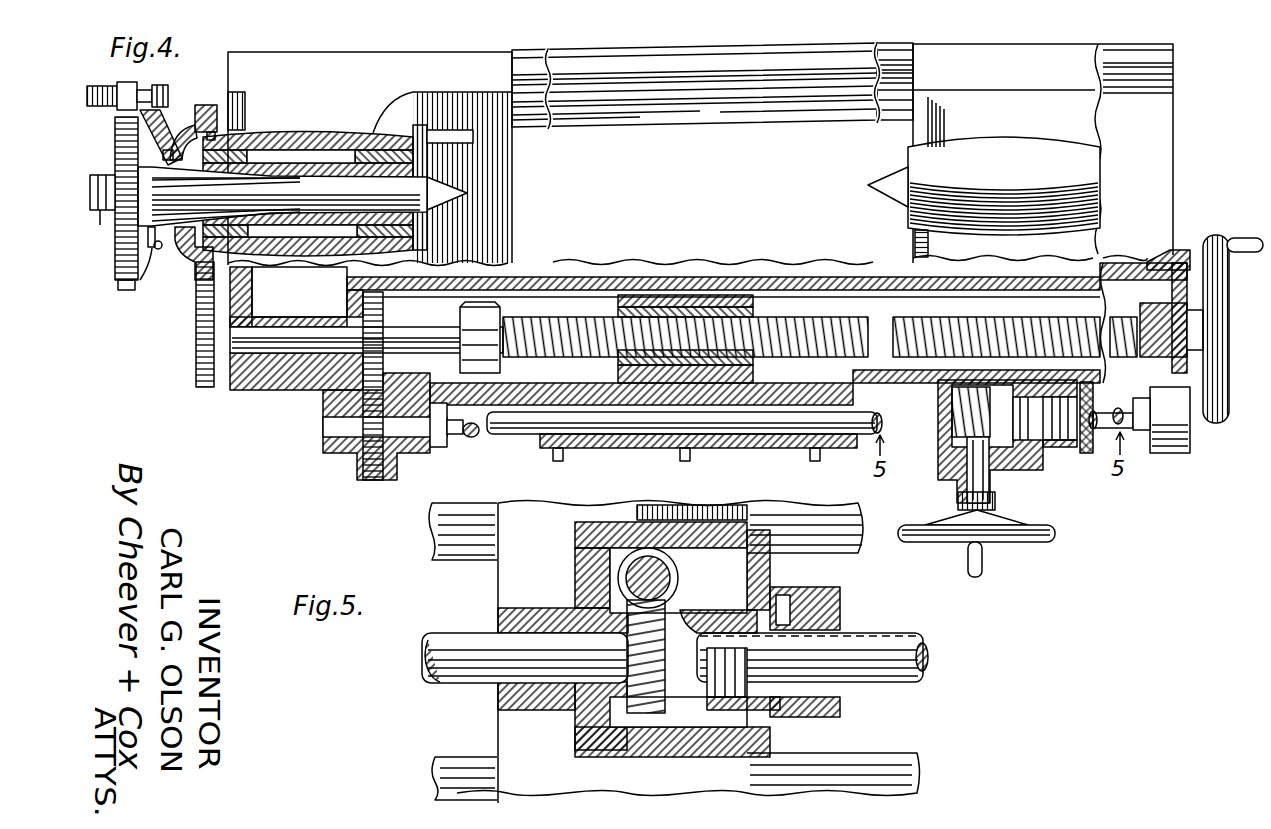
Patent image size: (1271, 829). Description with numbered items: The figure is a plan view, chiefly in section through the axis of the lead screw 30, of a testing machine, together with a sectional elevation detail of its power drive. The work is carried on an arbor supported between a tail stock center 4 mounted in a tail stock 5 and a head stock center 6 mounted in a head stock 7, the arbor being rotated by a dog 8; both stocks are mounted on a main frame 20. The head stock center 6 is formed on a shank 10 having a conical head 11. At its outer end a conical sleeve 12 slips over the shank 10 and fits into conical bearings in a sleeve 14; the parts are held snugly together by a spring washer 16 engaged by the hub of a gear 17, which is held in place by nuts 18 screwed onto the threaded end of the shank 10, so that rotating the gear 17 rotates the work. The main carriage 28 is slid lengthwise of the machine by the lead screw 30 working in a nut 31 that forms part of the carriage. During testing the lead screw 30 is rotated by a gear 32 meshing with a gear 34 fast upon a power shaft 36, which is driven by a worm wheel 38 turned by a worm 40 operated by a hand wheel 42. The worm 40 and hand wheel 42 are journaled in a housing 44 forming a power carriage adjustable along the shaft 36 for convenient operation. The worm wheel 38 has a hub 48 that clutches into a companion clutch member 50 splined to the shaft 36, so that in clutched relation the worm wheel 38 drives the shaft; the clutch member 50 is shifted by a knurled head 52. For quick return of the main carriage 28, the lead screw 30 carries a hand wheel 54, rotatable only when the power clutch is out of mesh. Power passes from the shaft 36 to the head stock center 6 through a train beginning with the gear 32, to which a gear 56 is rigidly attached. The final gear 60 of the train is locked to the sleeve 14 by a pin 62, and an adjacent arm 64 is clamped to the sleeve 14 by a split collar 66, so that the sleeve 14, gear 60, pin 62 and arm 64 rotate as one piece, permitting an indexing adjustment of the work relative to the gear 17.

In FIG. 4, the tail stock center 4 is at (890, 185).
In FIG. 4, the tail stock 5 is at (1018, 147).
In FIG. 4, the head stock center 6 is at (457, 203).
In FIG. 4, the head stock 7 is at (330, 130).
In FIG. 4, the dog 8 is at (455, 135).
In FIG. 4, the shank 10 is at (318, 190).
In FIG. 4, the conical head 11 is at (400, 183).
In FIG. 4, the conical sleeve 12 is at (188, 265).
In FIG. 4, the sleeve 14 is at (282, 152).
In FIG. 4, the spring washer 16 is at (140, 280).
In FIG. 4, the gear 17 is at (140, 272).
In FIG. 4, the nuts 18 is at (120, 228).
In FIG. 4, the main frame 20 is at (765, 116).
In FIG. 5, the main frame 20 is at (430, 540).
In FIG. 4, the main carriage 28 is at (752, 447).
In FIG. 4, the lead screw 30 is at (847, 350).
In FIG. 4, the nut 31 is at (697, 300).
In FIG. 4, the gear 32 is at (330, 382).
In FIG. 4, the gear 34 is at (372, 480).
In FIG. 4, the power shaft 36 is at (491, 430).
In FIG. 5, the power shaft 36 is at (443, 650).
In FIG. 5, the worm wheel 38 is at (650, 715).
In FIG. 5, the worm 40 is at (670, 572).
In FIG. 4, the hand wheel 42 is at (1000, 545).
In FIG. 4, the housing 44 is at (1010, 445).
In FIG. 5, the housing 44 is at (593, 725).
In FIG. 4, the hub 48 is at (1010, 470).
In FIG. 5, the hub 48 is at (698, 697).
In FIG. 4, the clutch member 50 is at (1062, 450).
In FIG. 5, the clutch member 50 is at (843, 627).
In FIG. 4, the knurled head 52 is at (1117, 455).
In FIG. 5, the knurled head 52 is at (833, 597).
In FIG. 4, the hand wheel 54 is at (1218, 238).
In FIG. 4, the gear 56 is at (200, 360).
In FIG. 4, the final gear 60 is at (205, 105).
In FIG. 4, the pin 62 is at (177, 140).
In FIG. 4, the arm 64 is at (152, 110).
In FIG. 4, the split collar 66 is at (158, 250).